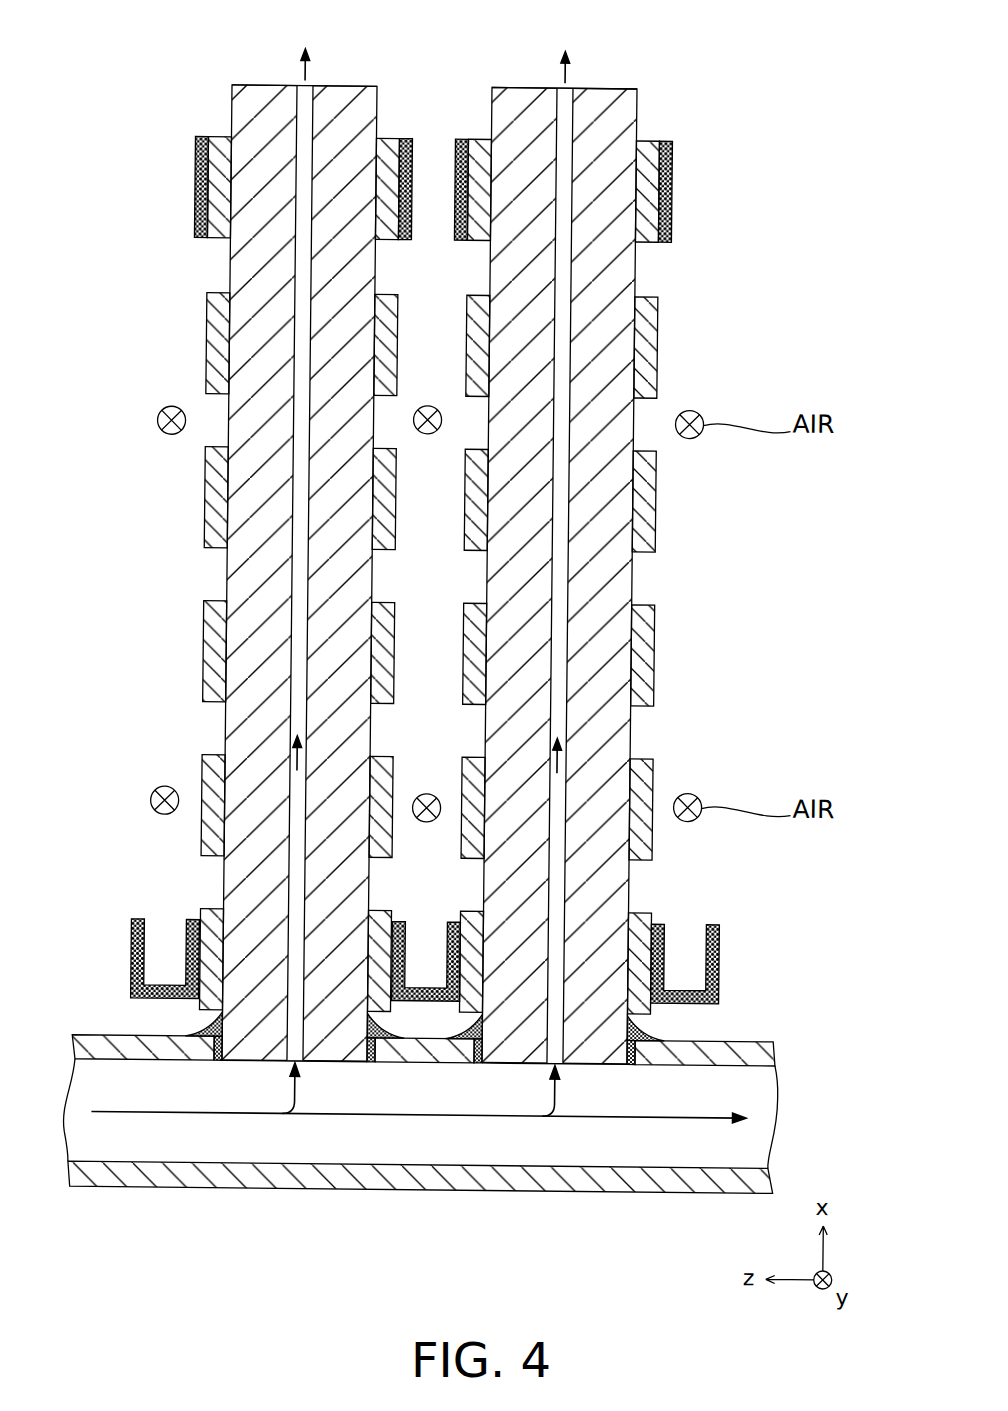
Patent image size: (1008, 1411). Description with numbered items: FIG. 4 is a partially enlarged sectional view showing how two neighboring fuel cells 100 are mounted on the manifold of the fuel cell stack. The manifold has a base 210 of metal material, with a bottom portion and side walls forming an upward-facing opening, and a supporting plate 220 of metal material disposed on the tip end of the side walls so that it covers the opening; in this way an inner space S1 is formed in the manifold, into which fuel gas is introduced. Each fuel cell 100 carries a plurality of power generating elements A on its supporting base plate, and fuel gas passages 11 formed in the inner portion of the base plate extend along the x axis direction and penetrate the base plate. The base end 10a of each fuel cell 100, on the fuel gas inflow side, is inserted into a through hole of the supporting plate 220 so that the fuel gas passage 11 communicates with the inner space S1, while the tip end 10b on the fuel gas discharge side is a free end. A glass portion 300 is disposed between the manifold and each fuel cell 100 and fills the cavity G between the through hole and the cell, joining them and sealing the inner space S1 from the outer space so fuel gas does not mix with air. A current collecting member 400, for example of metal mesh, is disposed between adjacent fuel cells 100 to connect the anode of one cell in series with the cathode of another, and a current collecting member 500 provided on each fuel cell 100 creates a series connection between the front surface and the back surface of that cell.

The fuel gas passage 11 is at (303, 94).
The base end 10a is at (330, 1058).
The tip end 10b is at (351, 94).
The fuel cell 100 is at (195, 671).
The base 210 is at (656, 1191).
The supporting plate 220 is at (768, 1037).
The glass portion 300 is at (193, 1018).
The current collecting member 400 is at (150, 932).
The current collecting member 500 is at (187, 168).
The power generating element A is at (204, 342).
The cavity G is at (226, 1078).
The inner space S1 is at (419, 1111).